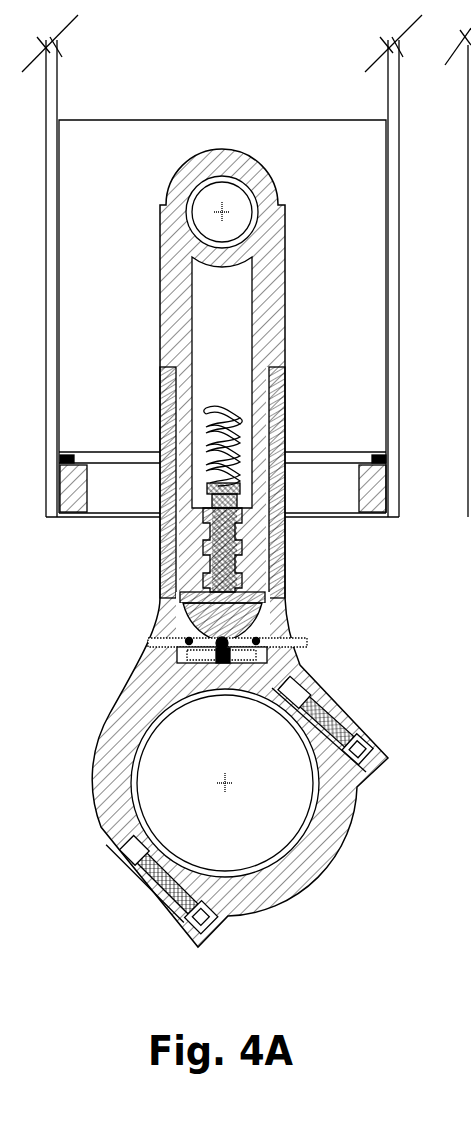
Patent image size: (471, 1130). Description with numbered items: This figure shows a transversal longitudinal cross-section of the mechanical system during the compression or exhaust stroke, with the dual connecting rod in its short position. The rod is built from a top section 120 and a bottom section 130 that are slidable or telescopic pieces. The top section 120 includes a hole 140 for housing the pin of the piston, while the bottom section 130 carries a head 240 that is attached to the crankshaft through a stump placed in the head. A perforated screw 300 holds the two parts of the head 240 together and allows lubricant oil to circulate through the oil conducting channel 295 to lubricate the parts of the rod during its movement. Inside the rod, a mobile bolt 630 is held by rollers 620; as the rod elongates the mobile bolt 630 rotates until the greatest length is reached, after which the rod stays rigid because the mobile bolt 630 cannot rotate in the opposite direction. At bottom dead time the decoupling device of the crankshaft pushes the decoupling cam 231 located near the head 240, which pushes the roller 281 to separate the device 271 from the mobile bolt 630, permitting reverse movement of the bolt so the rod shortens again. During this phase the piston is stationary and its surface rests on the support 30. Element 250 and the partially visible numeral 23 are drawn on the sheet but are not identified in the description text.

The support 30 is at (235, 346).
The top section 120 is at (270, 240).
The hole 140 is at (174, 150).
The bottom section 130 is at (304, 484).
The mobile bolt 630 is at (159, 401).
The rollers 620 is at (284, 561).
The decoupling cam 231 is at (210, 655).
The device 271 is at (265, 655).
The roller 281 is at (145, 620).
The oil conducting channel 295 is at (358, 697).
The perforated screw 300 is at (371, 709).
The head 240 is at (162, 898).
The bolt head 250 is at (124, 925).
The cylinder (partially shown) 23 is at (464, 583).